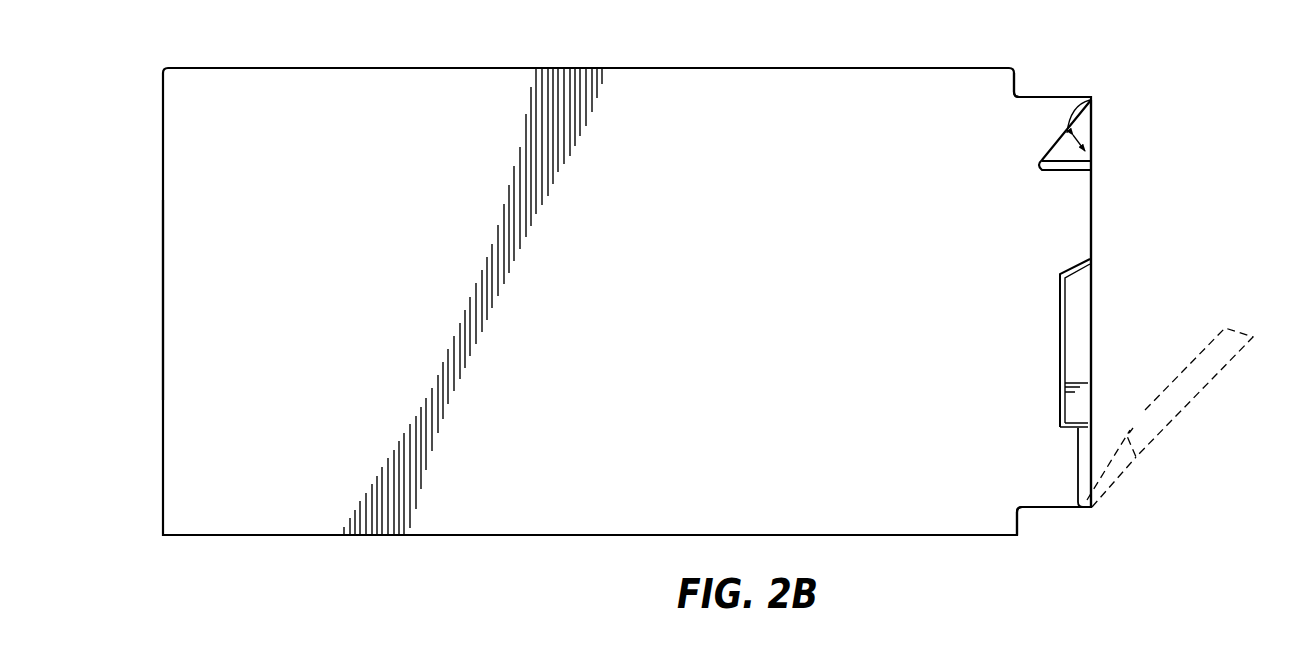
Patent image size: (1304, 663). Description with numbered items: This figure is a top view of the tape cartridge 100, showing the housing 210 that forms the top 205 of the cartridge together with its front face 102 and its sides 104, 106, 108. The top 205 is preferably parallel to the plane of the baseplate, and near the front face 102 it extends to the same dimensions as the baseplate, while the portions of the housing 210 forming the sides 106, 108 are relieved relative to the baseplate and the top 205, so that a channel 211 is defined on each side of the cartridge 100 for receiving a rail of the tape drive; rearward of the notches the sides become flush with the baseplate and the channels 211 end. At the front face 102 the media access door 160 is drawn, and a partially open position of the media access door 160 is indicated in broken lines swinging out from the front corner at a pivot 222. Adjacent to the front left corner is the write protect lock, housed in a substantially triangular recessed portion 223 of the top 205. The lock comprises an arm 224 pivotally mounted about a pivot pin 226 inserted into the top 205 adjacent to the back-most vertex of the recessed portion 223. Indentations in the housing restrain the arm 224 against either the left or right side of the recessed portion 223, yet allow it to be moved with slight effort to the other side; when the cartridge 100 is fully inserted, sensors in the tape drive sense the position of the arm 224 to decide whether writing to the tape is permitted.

The tape cartridge 100 is at (283, 82).
The front face 102 is at (1125, 262).
The side 104 is at (159, 377).
The side 106 is at (668, 68).
The side 108 is at (565, 537).
The media access door 160 is at (1092, 328).
The top 205 is at (275, 520).
The housing 210 is at (827, 82).
The channel 211 is at (1084, 73).
The pivot 222 is at (1100, 508).
The recessed portion 223 is at (1093, 165).
The arm 224 is at (1086, 172).
The pivot pin 226 is at (1092, 100).